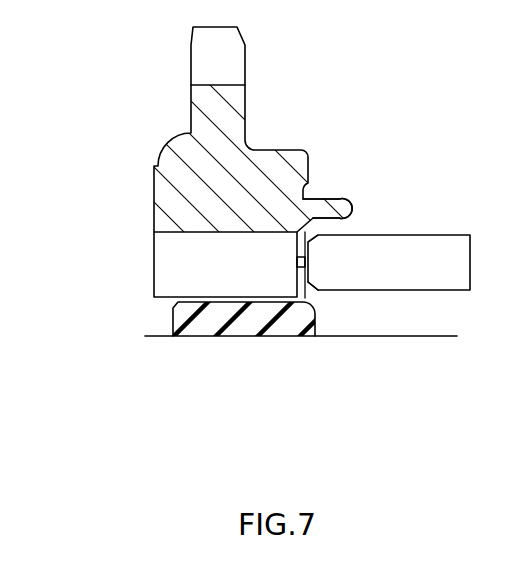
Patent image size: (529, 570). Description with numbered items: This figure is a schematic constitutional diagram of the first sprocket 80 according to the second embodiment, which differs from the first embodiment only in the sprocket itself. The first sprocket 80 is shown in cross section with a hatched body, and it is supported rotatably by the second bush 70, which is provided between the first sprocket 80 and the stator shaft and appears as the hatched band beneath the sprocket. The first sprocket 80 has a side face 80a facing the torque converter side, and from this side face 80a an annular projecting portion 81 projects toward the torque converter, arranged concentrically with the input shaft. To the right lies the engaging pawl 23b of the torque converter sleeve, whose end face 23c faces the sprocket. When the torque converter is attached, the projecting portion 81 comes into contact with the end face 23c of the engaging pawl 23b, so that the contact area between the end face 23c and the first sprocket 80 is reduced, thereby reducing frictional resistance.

The first sprocket 80 is at (245, 117).
The side face 80a is at (303, 230).
The annular projecting portion 81 is at (305, 267).
The engaging pawl 23b is at (395, 235).
The end face 23c is at (308, 273).
The second bush 70 is at (173, 311).